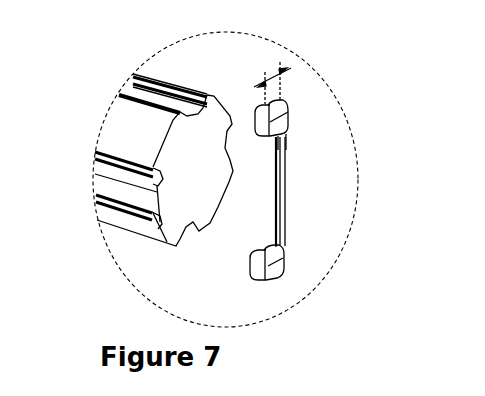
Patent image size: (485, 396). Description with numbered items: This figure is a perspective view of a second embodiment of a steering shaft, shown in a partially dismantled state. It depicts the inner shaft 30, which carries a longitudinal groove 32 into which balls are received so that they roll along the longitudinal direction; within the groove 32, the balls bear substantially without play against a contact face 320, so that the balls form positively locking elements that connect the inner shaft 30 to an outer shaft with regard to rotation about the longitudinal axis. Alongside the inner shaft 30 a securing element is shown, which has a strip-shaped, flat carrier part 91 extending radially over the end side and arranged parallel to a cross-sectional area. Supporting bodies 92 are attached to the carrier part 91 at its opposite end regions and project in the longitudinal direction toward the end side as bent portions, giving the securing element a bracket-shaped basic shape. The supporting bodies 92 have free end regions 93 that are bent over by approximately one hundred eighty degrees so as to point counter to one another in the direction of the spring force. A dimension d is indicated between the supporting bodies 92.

The inner shaft 30 is at (122, 133).
The groove 32 is at (137, 73).
The contact face 320 is at (187, 103).
The carrier part 91 is at (288, 193).
The supporting body 92 is at (281, 120).
The free end region 93 is at (268, 135).
The distance d is at (272, 77).